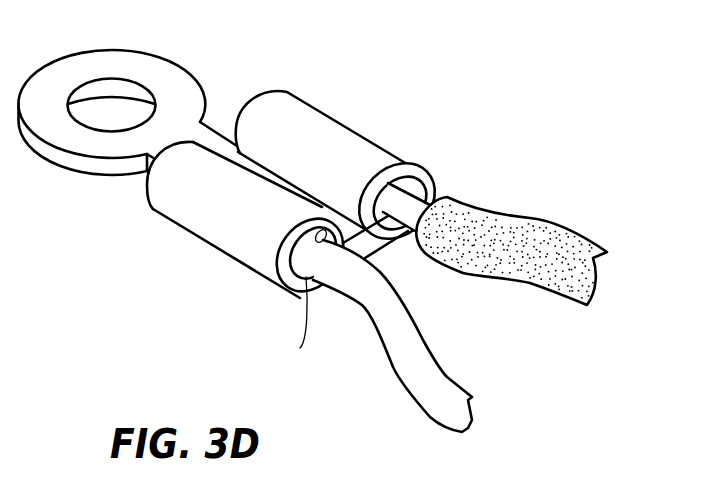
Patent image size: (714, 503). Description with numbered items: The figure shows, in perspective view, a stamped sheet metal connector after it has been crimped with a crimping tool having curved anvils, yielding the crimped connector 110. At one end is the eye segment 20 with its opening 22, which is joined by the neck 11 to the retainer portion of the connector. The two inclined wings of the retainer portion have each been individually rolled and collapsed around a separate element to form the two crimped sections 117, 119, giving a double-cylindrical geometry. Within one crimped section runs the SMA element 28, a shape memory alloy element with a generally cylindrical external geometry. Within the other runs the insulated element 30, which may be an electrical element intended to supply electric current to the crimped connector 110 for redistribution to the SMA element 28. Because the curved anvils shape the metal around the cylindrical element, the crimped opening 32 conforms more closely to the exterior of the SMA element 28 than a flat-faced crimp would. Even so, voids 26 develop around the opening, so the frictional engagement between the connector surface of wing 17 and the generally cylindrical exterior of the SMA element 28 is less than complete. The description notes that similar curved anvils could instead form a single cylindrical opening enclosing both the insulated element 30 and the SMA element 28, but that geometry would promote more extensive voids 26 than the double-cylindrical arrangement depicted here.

The eye segment 20 is at (143, 97).
The opening 22 is at (100, 113).
The neck 11 is at (222, 135).
The crimped section 119 is at (358, 152).
The crimped section 117 is at (192, 213).
The crimped connector 110 is at (233, 260).
The voids 26 is at (303, 272).
The wing 17 is at (320, 220).
The SMA element 28 is at (413, 342).
The insulated element 30 is at (432, 195).
The crimped opening 32 is at (300, 348).